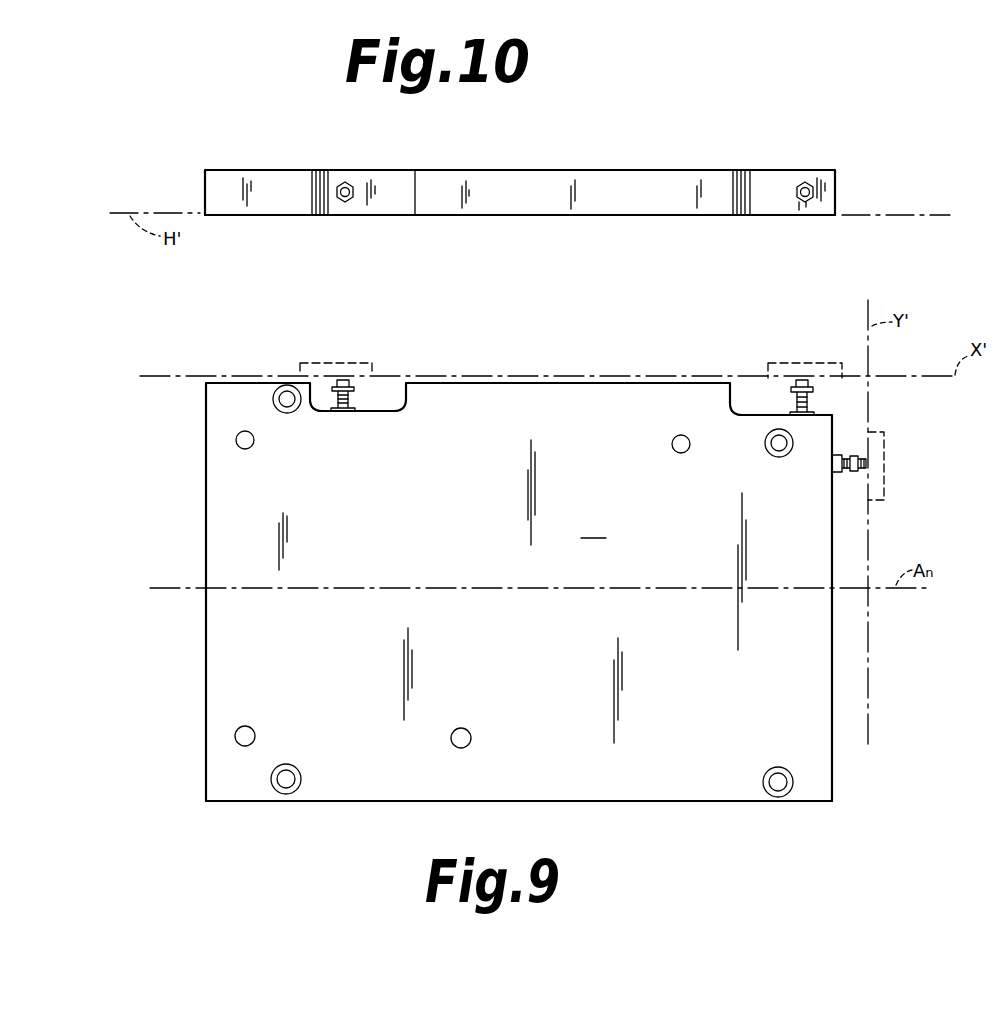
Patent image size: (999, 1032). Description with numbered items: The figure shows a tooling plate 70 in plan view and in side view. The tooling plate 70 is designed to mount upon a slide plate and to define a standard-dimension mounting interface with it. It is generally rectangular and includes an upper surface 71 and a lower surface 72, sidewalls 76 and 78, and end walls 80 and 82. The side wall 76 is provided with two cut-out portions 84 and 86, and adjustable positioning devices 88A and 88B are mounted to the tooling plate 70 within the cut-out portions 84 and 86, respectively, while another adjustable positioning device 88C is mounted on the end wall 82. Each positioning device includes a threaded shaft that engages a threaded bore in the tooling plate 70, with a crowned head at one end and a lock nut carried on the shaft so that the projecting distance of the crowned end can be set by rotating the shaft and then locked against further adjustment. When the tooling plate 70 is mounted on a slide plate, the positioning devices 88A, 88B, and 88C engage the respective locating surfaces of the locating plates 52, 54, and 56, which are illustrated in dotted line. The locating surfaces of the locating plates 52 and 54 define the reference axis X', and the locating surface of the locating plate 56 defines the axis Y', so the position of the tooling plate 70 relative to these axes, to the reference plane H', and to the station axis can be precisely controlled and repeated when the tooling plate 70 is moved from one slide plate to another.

In FIG. 10, the tooling plate 70 is at (560, 168).
In FIG. 9, the tooling plate 70 is at (838, 782).
In FIG. 9, the upper surface 71 is at (593, 527).
In FIG. 10, the lower surface 72 is at (590, 216).
In FIG. 9, the sidewall 76 is at (548, 385).
In FIG. 9, the sidewall 78 is at (553, 803).
In FIG. 10, the end wall 80 is at (205, 190).
In FIG. 9, the end wall 80 is at (206, 537).
In FIG. 10, the end wall 82 is at (836, 190).
In FIG. 9, the end wall 82 is at (831, 527).
In FIG. 9, the cut-out portion 84 is at (394, 406).
In FIG. 9, the cut-out portion 86 is at (758, 398).
In FIG. 9, the locating plate 52 is at (795, 362).
In FIG. 9, the locating plate 54 is at (346, 362).
In FIG. 9, the locating plate 56 is at (885, 458).
In FIG. 10, the adjustable positioning device 88A is at (346, 182).
In FIG. 9, the adjustable positioning device 88A is at (332, 410).
In FIG. 10, the adjustable positioning device 88B is at (806, 182).
In FIG. 9, the adjustable positioning device 88B is at (796, 397).
In FIG. 9, the adjustable positioning device 88C is at (834, 455).